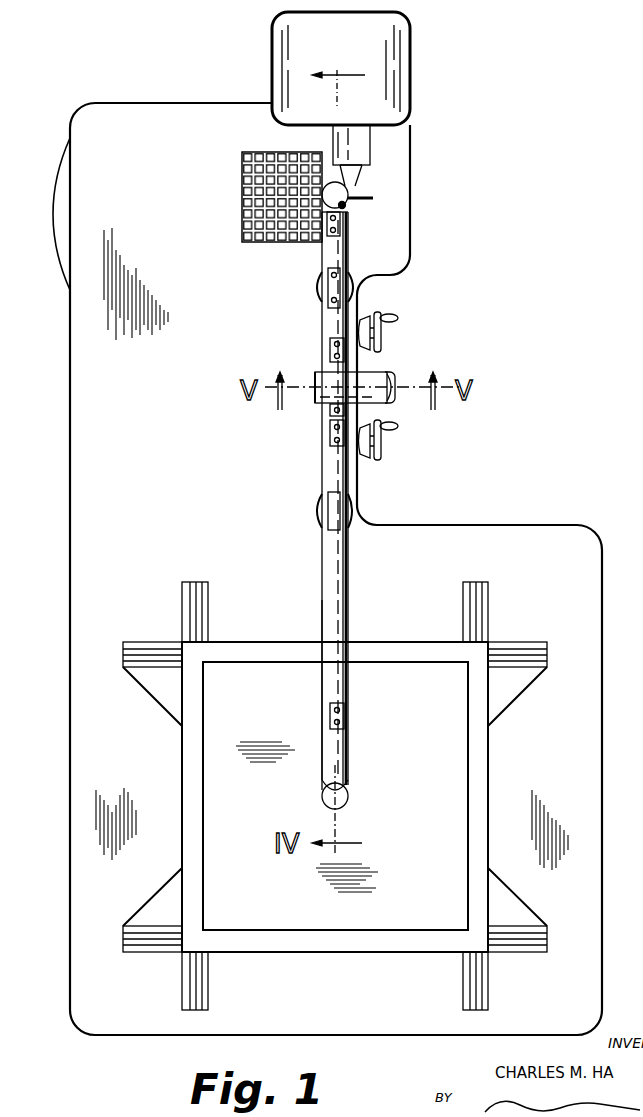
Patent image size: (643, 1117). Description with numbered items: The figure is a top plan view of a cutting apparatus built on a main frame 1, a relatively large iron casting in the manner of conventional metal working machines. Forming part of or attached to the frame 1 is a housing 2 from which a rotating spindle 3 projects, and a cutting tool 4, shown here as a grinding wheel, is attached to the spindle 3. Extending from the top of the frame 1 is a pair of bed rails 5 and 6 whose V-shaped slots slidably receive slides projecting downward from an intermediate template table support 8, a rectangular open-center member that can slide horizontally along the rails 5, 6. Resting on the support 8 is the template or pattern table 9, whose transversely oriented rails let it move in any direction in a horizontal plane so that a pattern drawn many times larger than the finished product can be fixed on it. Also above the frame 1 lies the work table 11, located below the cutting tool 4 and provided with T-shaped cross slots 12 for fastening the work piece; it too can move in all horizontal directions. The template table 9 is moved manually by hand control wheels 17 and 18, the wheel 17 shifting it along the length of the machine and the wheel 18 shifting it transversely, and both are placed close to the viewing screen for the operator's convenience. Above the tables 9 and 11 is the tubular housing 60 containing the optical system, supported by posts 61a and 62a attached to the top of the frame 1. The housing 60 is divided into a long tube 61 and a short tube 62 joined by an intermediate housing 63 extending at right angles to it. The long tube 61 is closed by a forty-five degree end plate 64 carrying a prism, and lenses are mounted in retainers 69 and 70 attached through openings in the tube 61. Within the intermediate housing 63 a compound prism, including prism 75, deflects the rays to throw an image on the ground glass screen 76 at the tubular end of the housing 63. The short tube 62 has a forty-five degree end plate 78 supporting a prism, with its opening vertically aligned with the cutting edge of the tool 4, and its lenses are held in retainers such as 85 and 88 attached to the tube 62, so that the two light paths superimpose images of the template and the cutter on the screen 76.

The main frame 1 is at (594, 572).
The housing 2 is at (412, 50).
The rotating spindle 3 is at (347, 188).
The cutting tool 4 is at (373, 198).
The 45 degree end plate 78 is at (350, 206).
The retainer 85 is at (345, 216).
The work table 11 is at (257, 185).
The T-shaped cross slots 12 is at (245, 213).
The short tube 62 is at (325, 318).
The post 62a is at (318, 280).
The retainer 88 is at (333, 350).
The hand control wheel 18 is at (384, 326).
The ground glass screen 76 is at (392, 404).
The prism 75 is at (315, 395).
The intermediate housing 63 is at (332, 410).
The retainer 70 is at (330, 434).
The hand control wheel 17 is at (381, 448).
The post 61a is at (318, 509).
The tubular housing 60 is at (300, 544).
The long tube 61 is at (333, 600).
The retainer 69 is at (330, 718).
The 45 degree positioned end plate 64 is at (345, 798).
The template table 9 is at (455, 763).
The bed rail 5 is at (196, 596).
The bed rail 6 is at (478, 598).
The intermediate template table support 8 is at (547, 940).